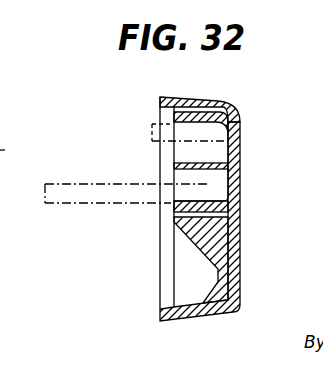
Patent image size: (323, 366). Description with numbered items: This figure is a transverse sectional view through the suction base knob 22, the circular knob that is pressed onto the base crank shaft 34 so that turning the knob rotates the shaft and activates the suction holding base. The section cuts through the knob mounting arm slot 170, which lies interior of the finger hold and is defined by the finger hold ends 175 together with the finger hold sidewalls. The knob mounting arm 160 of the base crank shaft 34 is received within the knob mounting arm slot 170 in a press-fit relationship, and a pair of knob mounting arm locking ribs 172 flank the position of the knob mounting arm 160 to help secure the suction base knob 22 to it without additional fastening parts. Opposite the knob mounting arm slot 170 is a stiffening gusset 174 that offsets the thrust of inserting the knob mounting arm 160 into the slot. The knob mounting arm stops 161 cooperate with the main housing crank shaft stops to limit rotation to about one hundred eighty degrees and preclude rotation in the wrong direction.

The suction base knob 22 is at (241, 199).
The finger hold ends 175 is at (202, 98).
The knob mounting arm stops 161 is at (151, 129).
The knob mounting arm slot 170 is at (201, 149).
The knob mounting arm 160 is at (216, 154).
The knob mounting arm locking ribs 172 is at (213, 159).
The stiffening gusset 174 is at (190, 238).
The base crank shaft 34 is at (90, 203).